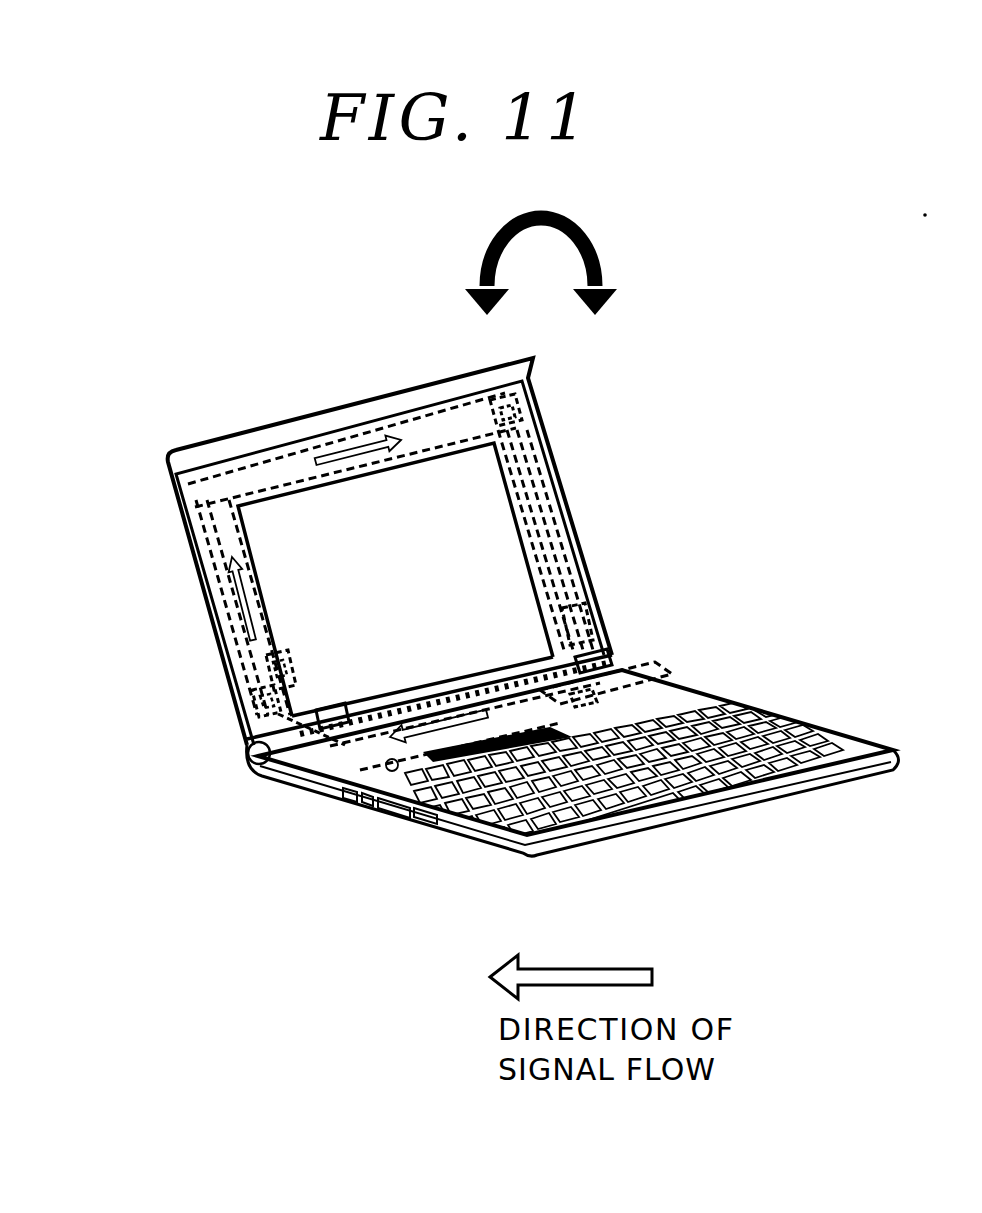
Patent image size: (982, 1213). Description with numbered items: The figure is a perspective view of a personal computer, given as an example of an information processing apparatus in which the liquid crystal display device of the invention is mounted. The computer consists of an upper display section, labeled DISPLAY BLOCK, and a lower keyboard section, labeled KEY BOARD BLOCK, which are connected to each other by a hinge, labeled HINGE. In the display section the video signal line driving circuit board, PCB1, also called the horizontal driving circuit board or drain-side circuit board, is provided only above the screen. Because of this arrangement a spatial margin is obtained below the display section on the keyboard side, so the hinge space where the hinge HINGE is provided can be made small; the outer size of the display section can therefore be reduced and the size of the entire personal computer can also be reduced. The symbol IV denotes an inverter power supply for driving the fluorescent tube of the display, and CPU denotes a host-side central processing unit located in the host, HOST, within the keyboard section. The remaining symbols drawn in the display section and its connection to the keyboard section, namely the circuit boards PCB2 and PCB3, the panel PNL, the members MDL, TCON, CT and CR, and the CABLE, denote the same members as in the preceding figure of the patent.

The display section DISPLAY BLOCK is at (247, 428).
The video signal line driving circuit board PCB1 is at (433, 407).
The connector CR is at (518, 406).
The second printed circuit board PCB2 is at (513, 468).
The inverter power supply IV is at (560, 500).
The third printed circuit board PCB3 is at (225, 545).
The liquid crystal display panel PNL is at (395, 579).
The module connector MDL is at (590, 630).
The timing controller TCON is at (296, 700).
The connector CT is at (262, 670).
The cable CABLE is at (232, 712).
The hinge HINGE is at (337, 714).
The host HOST is at (643, 667).
The host-side central processing unit CPU is at (587, 697).
The keyboard section KEY BOARD BLOCK is at (707, 775).